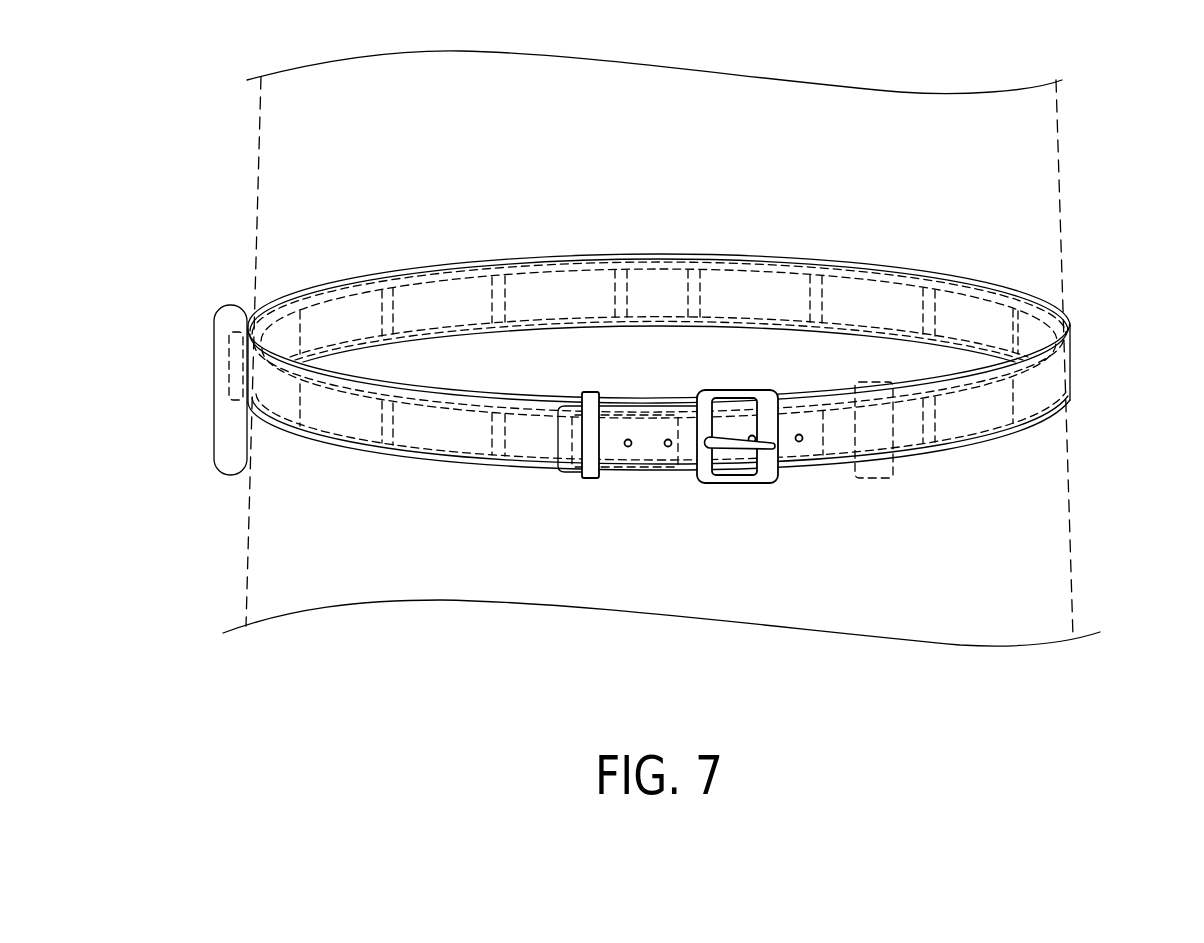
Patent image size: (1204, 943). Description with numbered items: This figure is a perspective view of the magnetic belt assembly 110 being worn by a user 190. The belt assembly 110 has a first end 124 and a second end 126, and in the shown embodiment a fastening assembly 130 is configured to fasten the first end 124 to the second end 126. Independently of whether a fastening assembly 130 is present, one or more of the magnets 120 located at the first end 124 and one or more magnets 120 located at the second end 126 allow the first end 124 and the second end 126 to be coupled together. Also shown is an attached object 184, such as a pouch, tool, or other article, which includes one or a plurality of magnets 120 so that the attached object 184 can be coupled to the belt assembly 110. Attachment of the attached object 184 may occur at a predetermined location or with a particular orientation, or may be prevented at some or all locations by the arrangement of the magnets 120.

The magnetic belt assembly 110 is at (1086, 359).
The magnets 120 is at (565, 300).
The first end 124 is at (573, 478).
The second end 126 is at (792, 483).
The fastening assembly 130 is at (781, 388).
The attached object 184 is at (237, 430).
The user 190 is at (985, 197).